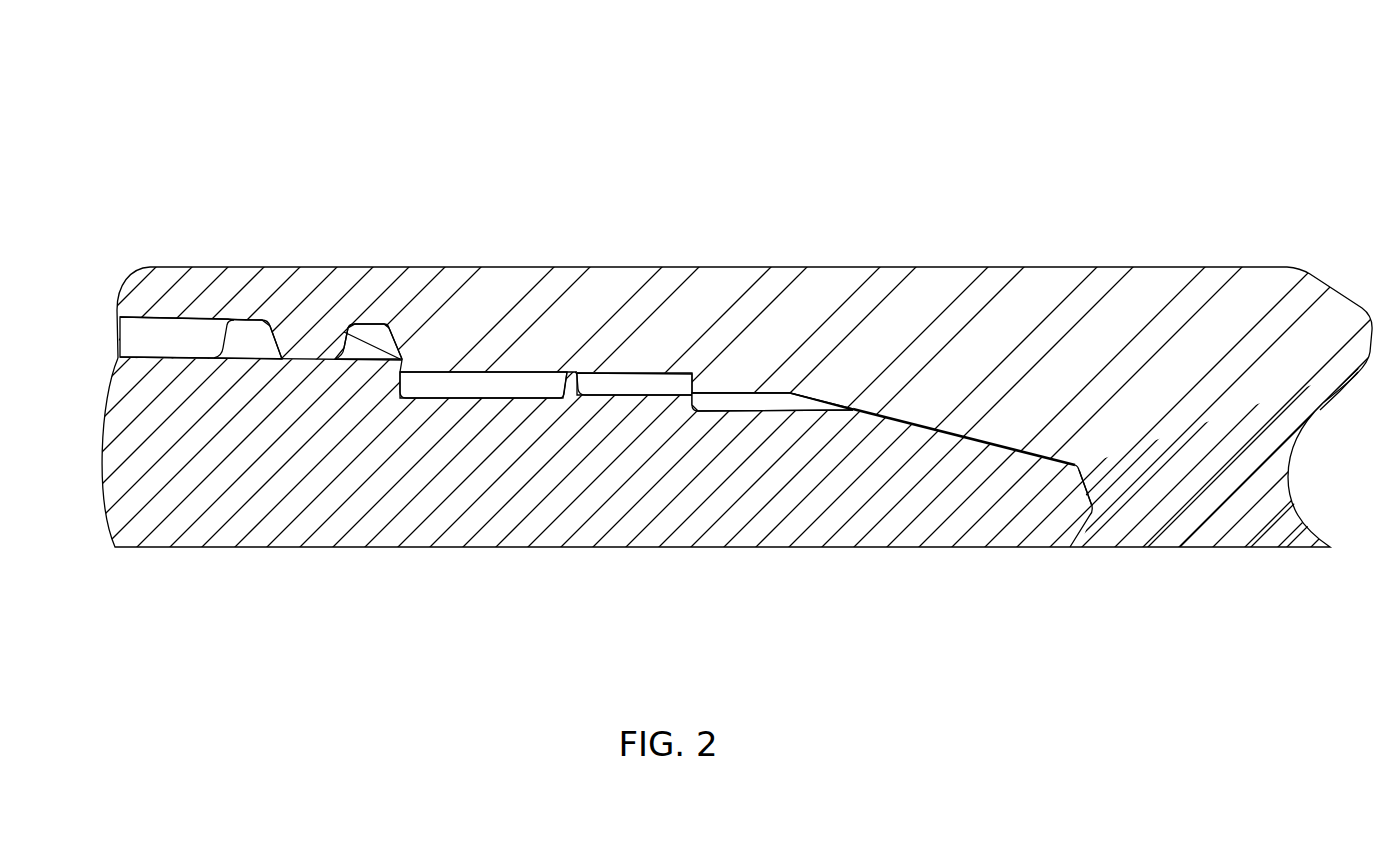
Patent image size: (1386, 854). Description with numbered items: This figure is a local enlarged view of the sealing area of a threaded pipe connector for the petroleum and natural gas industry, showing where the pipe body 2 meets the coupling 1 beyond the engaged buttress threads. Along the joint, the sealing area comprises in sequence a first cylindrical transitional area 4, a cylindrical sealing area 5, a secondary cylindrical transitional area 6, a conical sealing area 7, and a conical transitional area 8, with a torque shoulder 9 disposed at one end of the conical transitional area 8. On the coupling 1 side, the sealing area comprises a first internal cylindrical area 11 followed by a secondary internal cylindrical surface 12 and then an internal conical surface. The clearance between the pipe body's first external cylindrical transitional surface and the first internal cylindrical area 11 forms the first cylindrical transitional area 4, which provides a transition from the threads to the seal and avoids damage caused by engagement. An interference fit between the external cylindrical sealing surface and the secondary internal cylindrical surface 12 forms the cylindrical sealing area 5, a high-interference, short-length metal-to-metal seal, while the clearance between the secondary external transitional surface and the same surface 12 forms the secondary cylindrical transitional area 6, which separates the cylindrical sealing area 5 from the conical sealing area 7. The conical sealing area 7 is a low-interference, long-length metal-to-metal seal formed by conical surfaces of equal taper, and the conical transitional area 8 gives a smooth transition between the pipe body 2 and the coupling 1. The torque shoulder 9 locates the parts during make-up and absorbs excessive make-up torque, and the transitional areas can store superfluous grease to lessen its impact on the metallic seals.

The coupling 1 is at (166, 285).
The pipe body 2 is at (248, 500).
The first cylindrical transitional area 4 is at (447, 388).
The cylindrical sealing area 5 is at (665, 390).
The secondary cylindrical transitional area 6 is at (751, 404).
The conical sealing area 7 is at (927, 420).
The conical transitional area 8 is at (1052, 547).
The torque shoulder 9 is at (1063, 480).
The first internal cylindrical area 11 is at (1005, 380).
The secondary internal cylindrical surface 12 is at (628, 468).